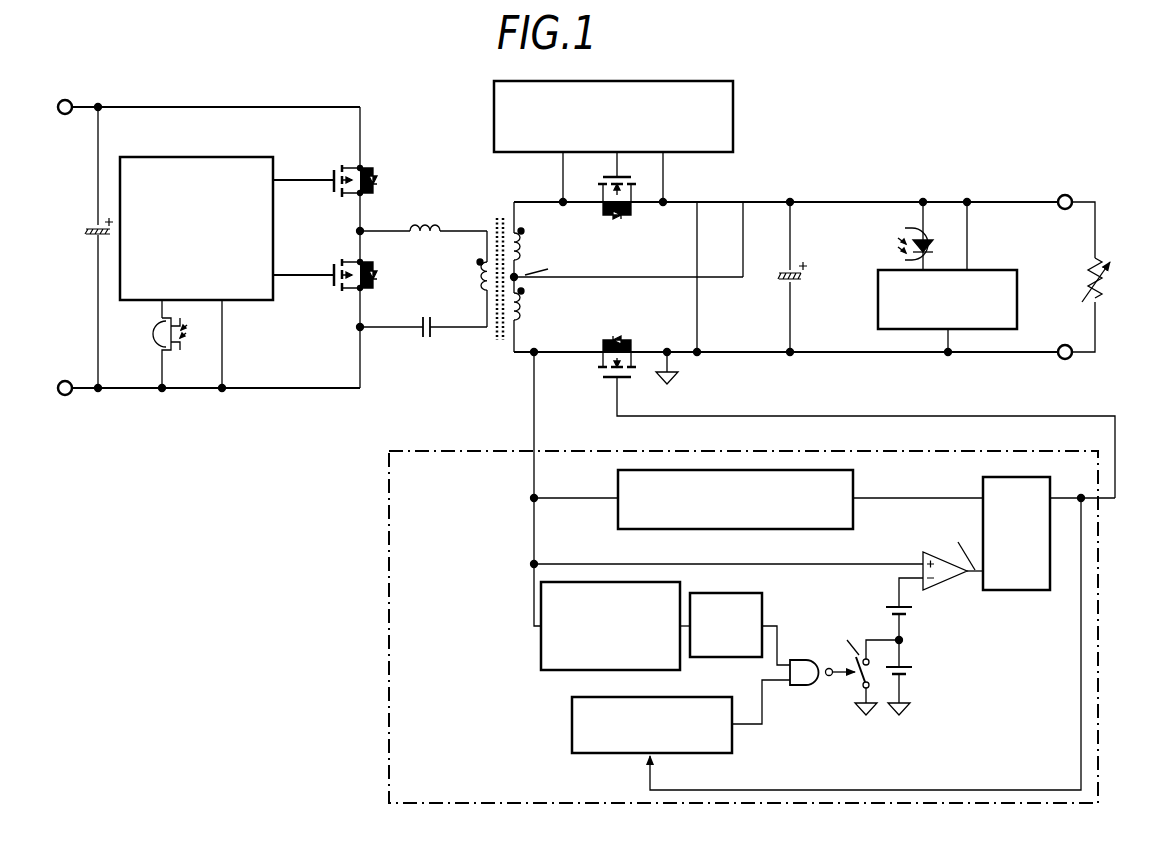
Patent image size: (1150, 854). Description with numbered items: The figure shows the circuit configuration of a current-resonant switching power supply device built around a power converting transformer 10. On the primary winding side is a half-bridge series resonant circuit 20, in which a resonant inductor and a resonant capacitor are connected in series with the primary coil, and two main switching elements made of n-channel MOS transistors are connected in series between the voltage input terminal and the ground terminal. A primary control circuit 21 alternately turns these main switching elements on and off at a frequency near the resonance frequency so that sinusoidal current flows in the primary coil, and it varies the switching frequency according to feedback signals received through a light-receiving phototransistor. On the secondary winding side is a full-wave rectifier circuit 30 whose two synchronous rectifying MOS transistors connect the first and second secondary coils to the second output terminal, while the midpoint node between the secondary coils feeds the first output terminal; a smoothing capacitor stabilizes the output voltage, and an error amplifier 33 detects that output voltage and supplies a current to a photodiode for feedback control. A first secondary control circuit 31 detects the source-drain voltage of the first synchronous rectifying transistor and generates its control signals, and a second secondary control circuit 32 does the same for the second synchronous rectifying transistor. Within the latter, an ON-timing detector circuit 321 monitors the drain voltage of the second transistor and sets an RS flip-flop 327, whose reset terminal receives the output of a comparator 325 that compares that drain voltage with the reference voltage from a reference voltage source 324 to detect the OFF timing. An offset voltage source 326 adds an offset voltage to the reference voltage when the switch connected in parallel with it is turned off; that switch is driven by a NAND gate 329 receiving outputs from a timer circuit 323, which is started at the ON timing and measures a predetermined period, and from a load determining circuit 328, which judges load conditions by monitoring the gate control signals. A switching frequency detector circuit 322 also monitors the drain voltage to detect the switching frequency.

The power converting transformer 10 is at (495, 200).
The half-bridge series resonant circuit 20 is at (228, 432).
The primary control circuit 21 is at (198, 156).
The full-wave rectifier circuit 30 is at (861, 165).
The first secondary control circuit 31 is at (737, 97).
The second secondary control circuit 32 is at (388, 553).
The error amplifier 33 is at (877, 307).
The ON-timing detector circuit 321 is at (855, 484).
The switching frequency detector circuit 322 is at (554, 673).
The timer circuit 323 is at (765, 611).
The reference voltage source 324 is at (880, 607).
The comparator 325 is at (921, 558).
The offset voltage source 326 is at (913, 686).
The RS flip-flop 327 is at (1018, 592).
The load determining circuit 328 is at (572, 737).
The NAND gate 329 is at (790, 688).